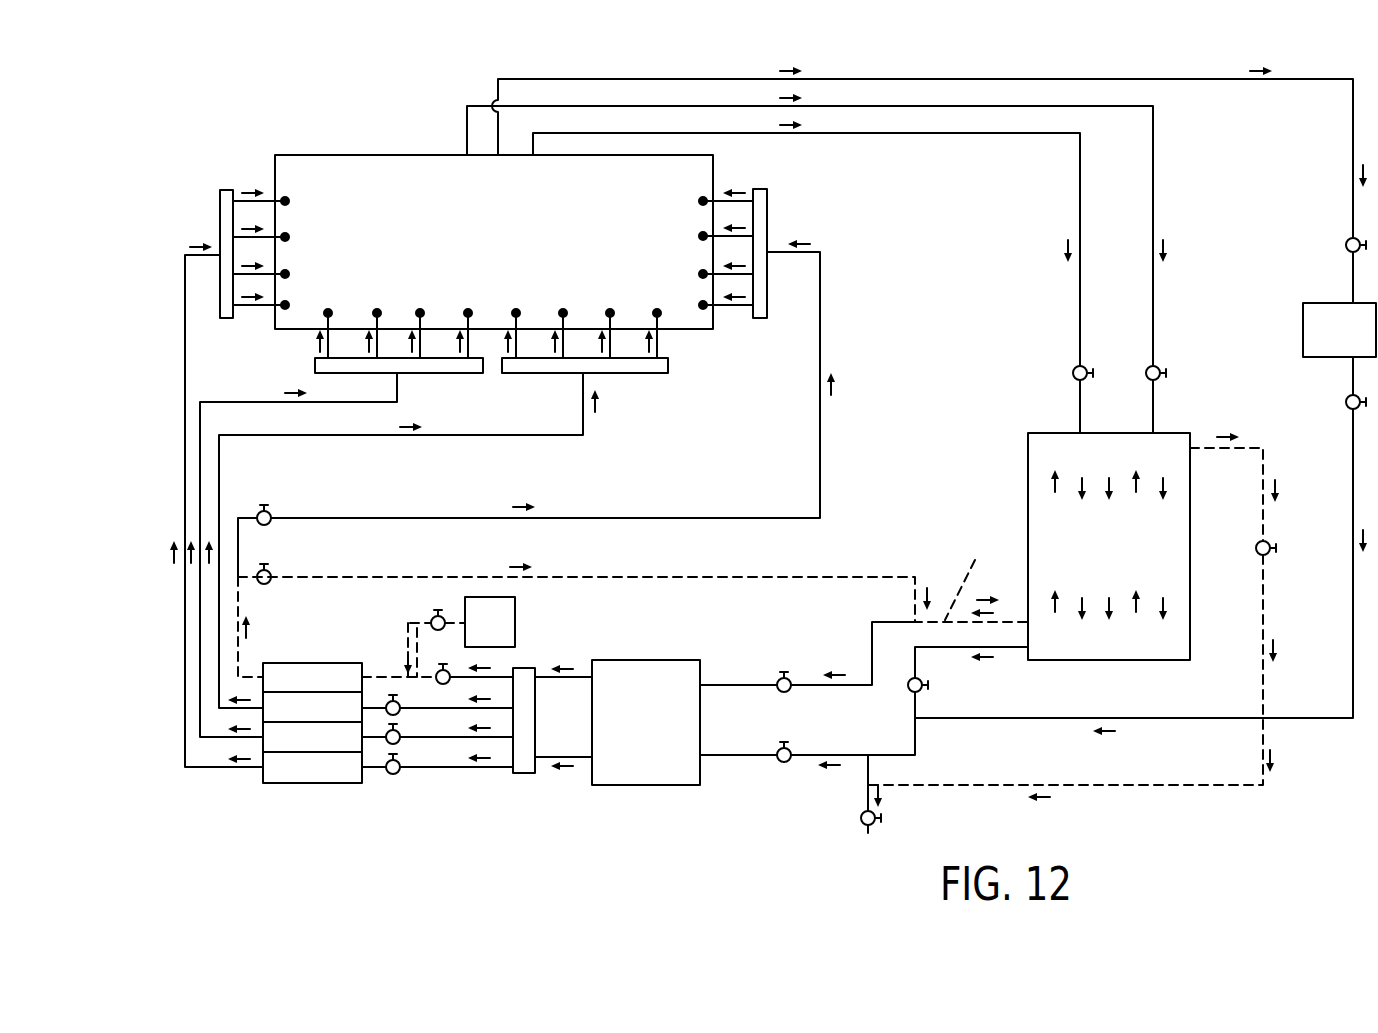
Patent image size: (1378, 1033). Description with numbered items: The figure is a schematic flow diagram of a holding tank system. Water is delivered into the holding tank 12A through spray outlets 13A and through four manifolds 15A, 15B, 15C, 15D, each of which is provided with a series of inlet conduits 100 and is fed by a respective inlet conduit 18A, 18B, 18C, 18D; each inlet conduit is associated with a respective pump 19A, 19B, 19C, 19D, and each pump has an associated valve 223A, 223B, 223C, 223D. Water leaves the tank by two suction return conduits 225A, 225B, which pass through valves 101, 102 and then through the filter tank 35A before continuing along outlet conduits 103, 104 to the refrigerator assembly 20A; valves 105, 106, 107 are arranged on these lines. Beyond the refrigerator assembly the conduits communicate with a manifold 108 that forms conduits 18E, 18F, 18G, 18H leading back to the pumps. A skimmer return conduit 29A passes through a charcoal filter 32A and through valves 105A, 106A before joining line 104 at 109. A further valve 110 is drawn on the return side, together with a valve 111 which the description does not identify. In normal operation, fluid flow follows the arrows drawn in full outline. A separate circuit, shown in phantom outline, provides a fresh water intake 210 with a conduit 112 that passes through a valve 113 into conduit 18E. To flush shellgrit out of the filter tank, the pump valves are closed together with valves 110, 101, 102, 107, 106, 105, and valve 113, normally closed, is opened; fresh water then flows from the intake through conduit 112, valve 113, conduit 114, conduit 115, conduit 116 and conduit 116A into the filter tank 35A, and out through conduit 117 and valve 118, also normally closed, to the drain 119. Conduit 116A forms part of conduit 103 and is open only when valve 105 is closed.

The holding tank 12A is at (531, 261).
The spray outlets 13A is at (289, 201).
The manifold 15A is at (227, 212).
The manifold 15B is at (450, 367).
The manifold 15C is at (638, 368).
The manifold 15D is at (760, 223).
The inlet conduit 18A is at (183, 335).
The inlet conduit 18B is at (222, 400).
The inlet conduit 18C is at (505, 440).
The inlet conduit 18D is at (820, 313).
The conduit 18E is at (447, 769).
The conduit 18F is at (437, 701).
The conduit 18G is at (437, 730).
The conduit 18H is at (437, 760).
The pump 19A is at (312, 767).
The pump 19B is at (312, 737).
The pump 19C is at (312, 707).
The pump 19D is at (312, 677).
The refrigerator assembly 20A is at (669, 727).
The skimmer return conduit 29A is at (877, 79).
The charcoal filter 32A is at (1367, 343).
The filter tank 35A is at (1137, 561).
The inlet conduits 100 is at (330, 322).
The valve 101 is at (1158, 367).
The valve 102 is at (1073, 368).
The outlet conduit 103 is at (872, 638).
The outlet conduit 104 is at (918, 660).
The valve 105 is at (780, 678).
The valve 105A is at (1346, 242).
The valve 106 is at (780, 762).
The valve 106A is at (1342, 400).
The valve 107 is at (912, 690).
The manifold 108 is at (523, 775).
The junction 109 is at (918, 722).
The valve 110 is at (270, 513).
The valve 111 is at (270, 573).
The conduit 112 is at (410, 623).
The valve 113 is at (433, 617).
The conduit 114 is at (392, 677).
The conduit 115 is at (240, 658).
The conduit 116 is at (650, 575).
The conduit 116A is at (972, 576).
The conduit 117 is at (1265, 518).
The valve 118 is at (1268, 555).
The drain 119 is at (862, 821).
The fresh water intake 210 is at (516, 611).
The valve 223A is at (392, 775).
The valve 223B is at (398, 743).
The valve 223C is at (389, 716).
The valve 223D is at (447, 685).
The suction return conduit 225A is at (1000, 106).
The suction return conduit 225B is at (930, 133).